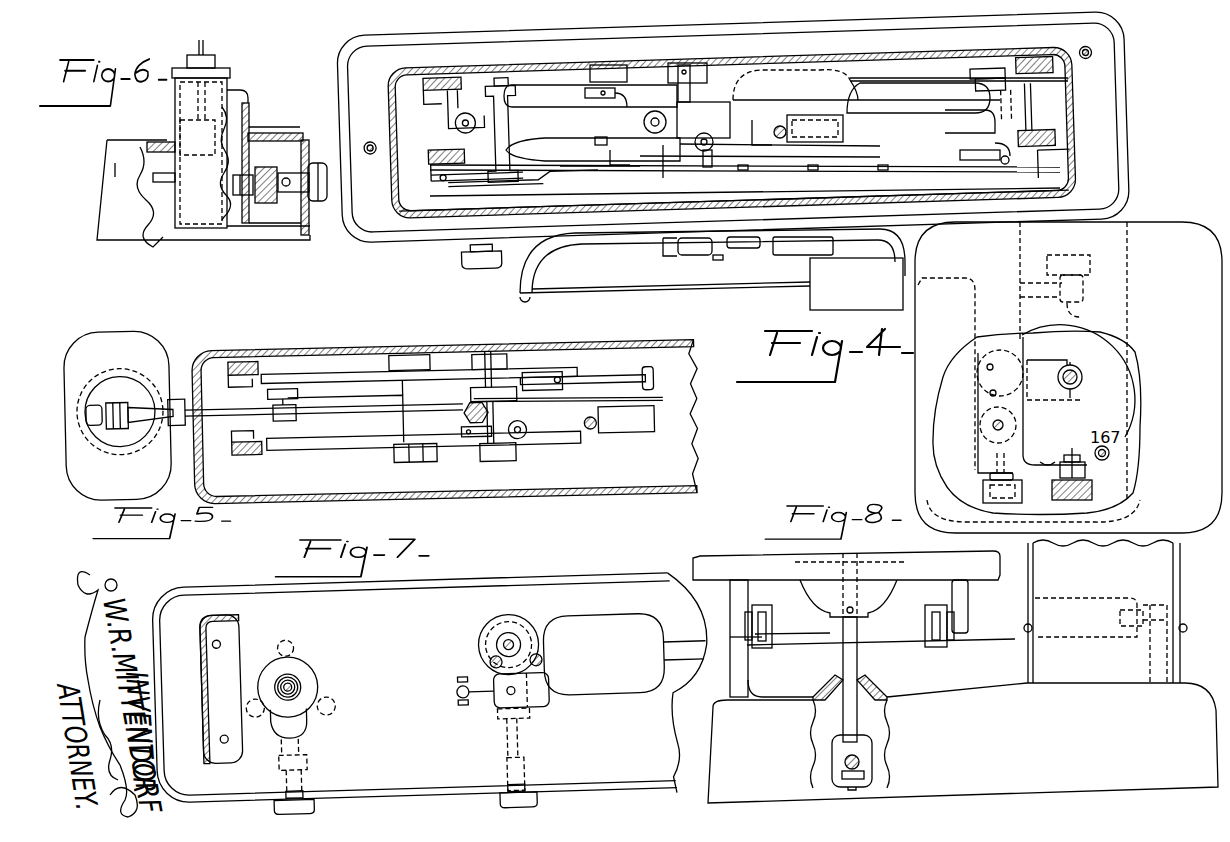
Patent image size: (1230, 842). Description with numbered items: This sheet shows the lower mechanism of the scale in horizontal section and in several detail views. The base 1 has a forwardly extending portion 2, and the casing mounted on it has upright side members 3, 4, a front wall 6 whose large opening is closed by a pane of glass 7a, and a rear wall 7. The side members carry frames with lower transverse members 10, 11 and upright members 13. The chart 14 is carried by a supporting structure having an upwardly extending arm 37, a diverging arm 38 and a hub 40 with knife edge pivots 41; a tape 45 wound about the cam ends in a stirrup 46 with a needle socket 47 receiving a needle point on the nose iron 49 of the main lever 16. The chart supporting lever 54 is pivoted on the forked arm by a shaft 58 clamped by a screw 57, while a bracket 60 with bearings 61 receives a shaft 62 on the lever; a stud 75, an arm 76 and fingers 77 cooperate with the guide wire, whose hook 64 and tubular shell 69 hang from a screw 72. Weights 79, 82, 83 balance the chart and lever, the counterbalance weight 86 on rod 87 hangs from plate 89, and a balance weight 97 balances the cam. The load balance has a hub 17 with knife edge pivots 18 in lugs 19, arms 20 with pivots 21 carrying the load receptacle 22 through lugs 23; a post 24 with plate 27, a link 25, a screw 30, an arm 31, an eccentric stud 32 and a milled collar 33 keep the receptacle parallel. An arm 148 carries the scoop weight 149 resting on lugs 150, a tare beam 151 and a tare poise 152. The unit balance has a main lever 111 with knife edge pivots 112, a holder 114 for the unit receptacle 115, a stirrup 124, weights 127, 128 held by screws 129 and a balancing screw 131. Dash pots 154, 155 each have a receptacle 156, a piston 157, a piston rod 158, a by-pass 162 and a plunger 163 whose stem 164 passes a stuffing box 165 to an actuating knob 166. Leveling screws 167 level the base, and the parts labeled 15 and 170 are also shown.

In FIG. 4, the base 1 is at (401, 245).
In FIG. 7, the base 1 is at (212, 578).
In FIG. 8, the base 1 is at (1198, 692).
In FIG. 8, the forwardly extending portion 2 is at (716, 717).
In FIG. 4, the side member 3 is at (393, 186).
In FIG. 5, the side member 3 is at (196, 482).
In FIG. 7, the side member 3 is at (206, 641).
In FIG. 4, the side member 4 is at (1070, 206).
In FIG. 8, the side member 4 is at (1103, 557).
In FIG. 4, the front wall 6 is at (1034, 70).
In FIG. 5, the front wall 6 is at (324, 356).
In FIG. 8, the front wall 6 is at (1180, 586).
In FIG. 4, the rear wall 7 is at (1046, 220).
In FIG. 5, the rear wall 7 is at (272, 506).
In FIG. 8, the rear wall 7 is at (1028, 580).
In FIG. 5, the pane of glass 7a is at (652, 500).
In FIG. 5, the lower transverse member 10 is at (371, 372).
In FIG. 5, the lower transverse member 11 is at (573, 455).
In FIG. 4, the upright member 13 is at (431, 94).
In FIG. 5, the upright member 13 is at (260, 362).
In FIG. 4, the chart 14 is at (483, 191).
In FIG. 4, the link 15 is at (500, 192).
In FIG. 4, the main lever 16 is at (900, 101).
In FIG. 7, the main lever 16 is at (625, 654).
In FIG. 4, the hub 17 is at (968, 122).
In FIG. 8, the hub 17 is at (967, 643).
In FIG. 4, the knife edge pivot 18 is at (980, 105).
In FIG. 8, the knife edge pivot 18 is at (1121, 617).
In FIG. 4, the lug 19 is at (983, 89).
In FIG. 8, the lug 19 is at (748, 681).
In FIG. 4, the arm 20 is at (1084, 290).
In FIG. 8, the arm 20 is at (762, 648).
In FIG. 4, the knife edge pivot 21 is at (1076, 390).
In FIG. 8, the knife edge pivot 21 is at (772, 631).
In FIG. 4, the load receptacle 22 is at (1068, 377).
In FIG. 8, the load receptacle 22 is at (841, 558).
In FIG. 4, the lug 23 is at (1092, 265).
In FIG. 8, the lug 23 is at (732, 595).
In FIG. 4, the post 24 is at (1058, 379).
In FIG. 8, the post 24 is at (858, 656).
In FIG. 4, the link 25 is at (1053, 389).
In FIG. 8, the link 25 is at (868, 776).
In FIG. 8, the plate 27 is at (864, 751).
In FIG. 8, the screw 30 is at (845, 766).
In FIG. 4, the arm 31 is at (990, 410).
In FIG. 4, the eccentric stud 32 is at (991, 459).
In FIG. 4, the milled collar 33 is at (985, 432).
In FIG. 4, the upwardly extending arm 37 is at (616, 97).
In FIG. 5, the upwardly extending arm 37 is at (466, 419).
In FIG. 4, the diverging arm 38 is at (822, 113).
In FIG. 5, the diverging arm 38 is at (652, 414).
In FIG. 5, the hub portion 40 is at (473, 401).
In FIG. 4, the knife edge pivot 41 is at (690, 92).
In FIG. 5, the knife edge pivot 41 is at (499, 468).
In FIG. 4, the tape 45 is at (663, 170).
In FIG. 5, the tape 45 is at (463, 438).
In FIG. 7, the stirrup 46 is at (463, 683).
In FIG. 7, the needle socket 47 is at (459, 702).
In FIG. 7, the nose iron 49 is at (480, 706).
In FIG. 4, the chart supporting lever 54 is at (692, 123).
In FIG. 4, the screw 57 is at (611, 168).
In FIG. 4, the shaft 58 is at (600, 141).
In FIG. 4, the bracket 60 is at (491, 108).
In FIG. 4, the bearing 61 is at (506, 83).
In FIG. 4, the shaft 62 is at (513, 134).
In FIG. 4, the hook 64 is at (476, 181).
In FIG. 4, the tubular shell 69 is at (984, 148).
In FIG. 4, the screw 72 is at (913, 183).
In FIG. 4, the stud 75 is at (458, 157).
In FIG. 4, the arm 76 is at (598, 170).
In FIG. 4, the finger 77 is at (718, 158).
In FIG. 4, the weight 79 is at (459, 127).
In FIG. 4, the weight 82 is at (644, 123).
In FIG. 4, the weight 83 is at (703, 120).
In FIG. 4, the weight 86 is at (815, 128).
In FIG. 5, the weight 86 is at (626, 419).
In FIG. 4, the rod 87 is at (757, 146).
In FIG. 4, the plate 89 is at (780, 139).
In FIG. 5, the plate 89 is at (594, 438).
In FIG. 4, the balance weight 97 is at (712, 138).
In FIG. 5, the balance weight 97 is at (522, 446).
In FIG. 5, the main lever 111 is at (223, 410).
In FIG. 5, the knife edge pivot 112 is at (416, 467).
In FIG. 5, the holder 114 is at (162, 430).
In FIG. 5, the unit receptacle 115 is at (140, 338).
In FIG. 5, the stirrup 124 is at (300, 396).
In FIG. 5, the weight 127 is at (605, 385).
In FIG. 5, the weight 128 is at (548, 380).
In FIG. 5, the screw 129 is at (656, 390).
In FIG. 5, the balancing screw 131 is at (96, 425).
In FIG. 4, the arm 148 is at (650, 237).
In FIG. 4, the scoop weight 149 is at (792, 256).
In FIG. 4, the lug 150 is at (676, 256).
In FIG. 4, the tare beam 151 is at (744, 290).
In FIG. 4, the tare poise 152 is at (856, 284).
In FIG. 7, the dash pot 154 is at (496, 636).
In FIG. 7, the dash pot 155 is at (305, 688).
In FIG. 6, the receptacle 156 is at (201, 153).
In FIG. 7, the receptacle 156 is at (276, 673).
In FIG. 6, the piston 157 is at (219, 140).
In FIG. 6, the piston rod 158 is at (206, 47).
In FIG. 7, the piston rod 158 is at (300, 686).
In FIG. 6, the by-pass 162 is at (246, 135).
In FIG. 7, the by-pass 162 is at (296, 736).
In FIG. 6, the plunger 163 is at (256, 198).
In FIG. 6, the stem 164 is at (262, 170).
In FIG. 6, the stuffing box 165 is at (298, 165).
In FIG. 4, the actuating knob 166 is at (481, 265).
In FIG. 6, the actuating knob 166 is at (319, 204).
In FIG. 7, the actuating knob 166 is at (312, 810).
In FIG. 4, the leveling screw 167 is at (1098, 91).
In FIG. 7, the leveling screw 167 is at (197, 692).
In FIG. 4, the rail 170 is at (745, 180).